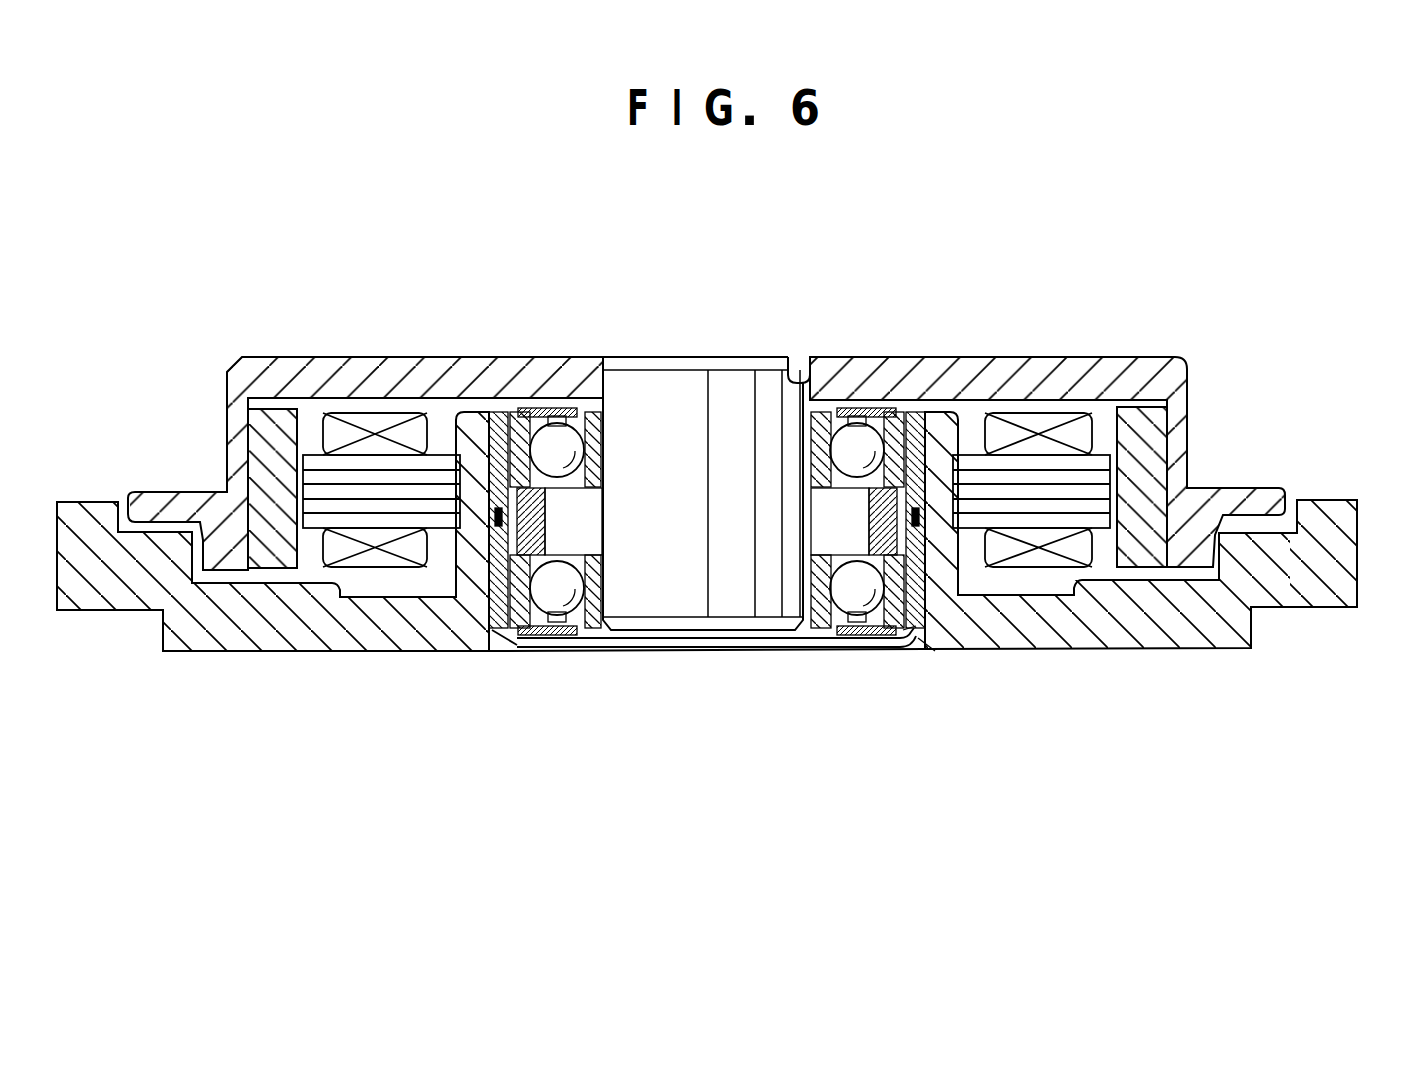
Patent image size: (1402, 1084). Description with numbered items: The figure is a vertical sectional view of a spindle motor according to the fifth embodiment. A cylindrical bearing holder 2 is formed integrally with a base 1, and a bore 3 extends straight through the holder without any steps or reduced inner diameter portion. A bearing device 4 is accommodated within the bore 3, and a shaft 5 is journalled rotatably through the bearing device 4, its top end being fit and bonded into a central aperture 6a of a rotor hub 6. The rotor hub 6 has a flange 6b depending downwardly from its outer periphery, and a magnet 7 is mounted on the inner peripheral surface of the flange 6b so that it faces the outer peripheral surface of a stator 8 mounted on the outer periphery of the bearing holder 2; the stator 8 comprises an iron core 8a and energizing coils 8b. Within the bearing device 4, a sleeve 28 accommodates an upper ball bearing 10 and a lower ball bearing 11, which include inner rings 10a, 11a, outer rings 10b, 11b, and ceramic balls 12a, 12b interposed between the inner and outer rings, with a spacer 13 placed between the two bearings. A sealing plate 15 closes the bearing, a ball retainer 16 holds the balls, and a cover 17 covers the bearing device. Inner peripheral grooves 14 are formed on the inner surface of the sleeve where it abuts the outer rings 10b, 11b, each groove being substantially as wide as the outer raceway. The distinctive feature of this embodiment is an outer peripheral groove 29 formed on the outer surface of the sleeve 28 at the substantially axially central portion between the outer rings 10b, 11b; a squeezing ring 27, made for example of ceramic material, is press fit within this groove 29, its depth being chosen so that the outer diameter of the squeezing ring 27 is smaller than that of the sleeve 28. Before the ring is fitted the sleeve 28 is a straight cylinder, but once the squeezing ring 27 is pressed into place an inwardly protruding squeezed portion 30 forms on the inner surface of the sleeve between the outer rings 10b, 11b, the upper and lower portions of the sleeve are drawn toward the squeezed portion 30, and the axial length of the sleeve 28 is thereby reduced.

The base 1 is at (1200, 649).
The bearing holder 2 is at (950, 412).
The bore 3 is at (917, 412).
The bearing device 4 is at (930, 652).
The shaft 5 is at (688, 385).
The rotor hub 6 is at (1102, 372).
The central aperture 6a is at (793, 362).
The flange 6b is at (1190, 428).
The magnet 7 is at (1157, 468).
The stator 8 is at (1022, 578).
The iron core 8a is at (1103, 524).
The energizing coils 8b is at (1058, 566).
The upper ball bearing 10 is at (540, 408).
The inner ring 10a is at (601, 420).
The outer ring 10b is at (511, 412).
The lower ball bearing 11 is at (559, 669).
The inner ring 11a is at (572, 600).
The outer ring 11b is at (512, 630).
The balls 12a is at (566, 436).
The balls 12b is at (560, 606).
The spacer 13 is at (870, 538).
The inner peripheral groove 14 is at (490, 414).
The sealing plate 15 is at (874, 408).
The ball retainer 16 is at (857, 414).
The cover 17 is at (727, 650).
The squeezing ring 27 is at (478, 528).
The sleeve 28 is at (920, 656).
The outer peripheral groove 29 is at (490, 526).
The squeezed portion 30 is at (545, 523).